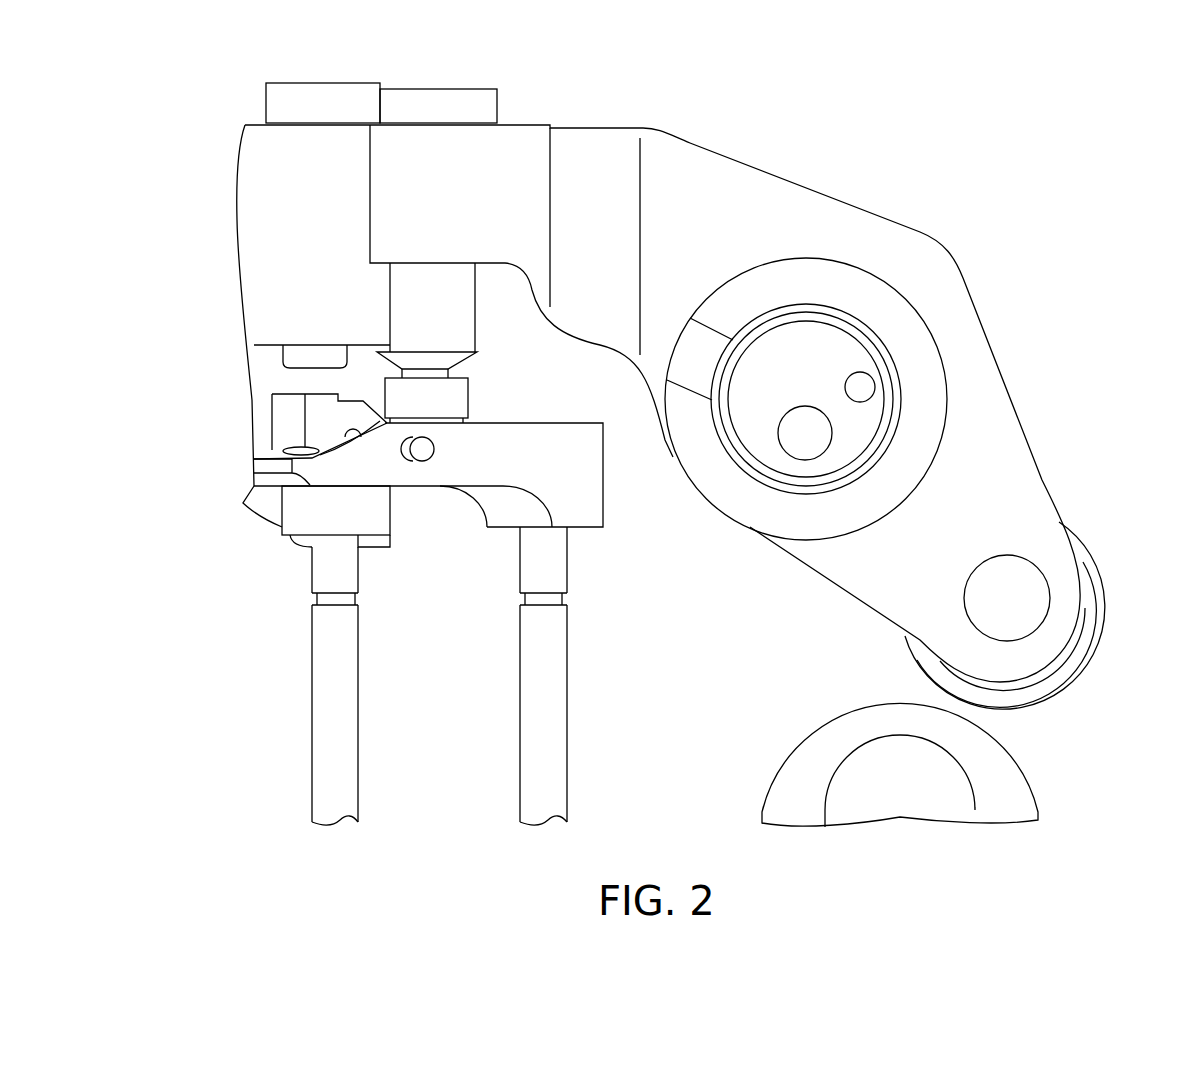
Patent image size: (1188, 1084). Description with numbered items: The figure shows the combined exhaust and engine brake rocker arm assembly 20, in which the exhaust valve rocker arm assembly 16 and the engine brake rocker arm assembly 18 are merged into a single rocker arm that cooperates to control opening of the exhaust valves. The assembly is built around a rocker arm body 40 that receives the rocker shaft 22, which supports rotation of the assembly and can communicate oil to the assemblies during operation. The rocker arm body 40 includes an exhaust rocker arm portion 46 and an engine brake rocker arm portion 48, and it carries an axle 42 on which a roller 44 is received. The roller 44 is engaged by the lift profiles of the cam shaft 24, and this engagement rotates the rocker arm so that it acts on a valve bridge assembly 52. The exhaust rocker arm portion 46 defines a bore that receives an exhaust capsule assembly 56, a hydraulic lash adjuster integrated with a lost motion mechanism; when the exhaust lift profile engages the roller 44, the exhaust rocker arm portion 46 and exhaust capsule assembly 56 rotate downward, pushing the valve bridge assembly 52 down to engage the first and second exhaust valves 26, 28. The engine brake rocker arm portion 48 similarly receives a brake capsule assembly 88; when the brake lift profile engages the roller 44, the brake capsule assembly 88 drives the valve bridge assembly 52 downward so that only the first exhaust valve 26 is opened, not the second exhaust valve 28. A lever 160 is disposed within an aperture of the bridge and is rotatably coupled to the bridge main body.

The exhaust valve rocker arm assembly 16 is at (525, 148).
The engine brake rocker arm assembly 18 is at (218, 345).
The combined exhaust and engine brake rocker arm assembly 20 is at (1042, 187).
The rocker shaft 22 is at (822, 337).
The cam shaft 24 is at (897, 805).
The first exhaust valve 26 is at (320, 683).
The second exhaust valve 28 is at (525, 683).
The rocker arm body 40 is at (677, 165).
The axle 42 is at (1007, 563).
The roller 44 is at (1088, 562).
The exhaust rocker arm portion 46 is at (483, 246).
The engine brake rocker arm portion 48 is at (252, 233).
The valve bridge assembly 52 is at (423, 484).
The exhaust capsule assembly 56 is at (467, 333).
The brake capsule assembly 88 is at (287, 350).
The lever 160 is at (287, 432).